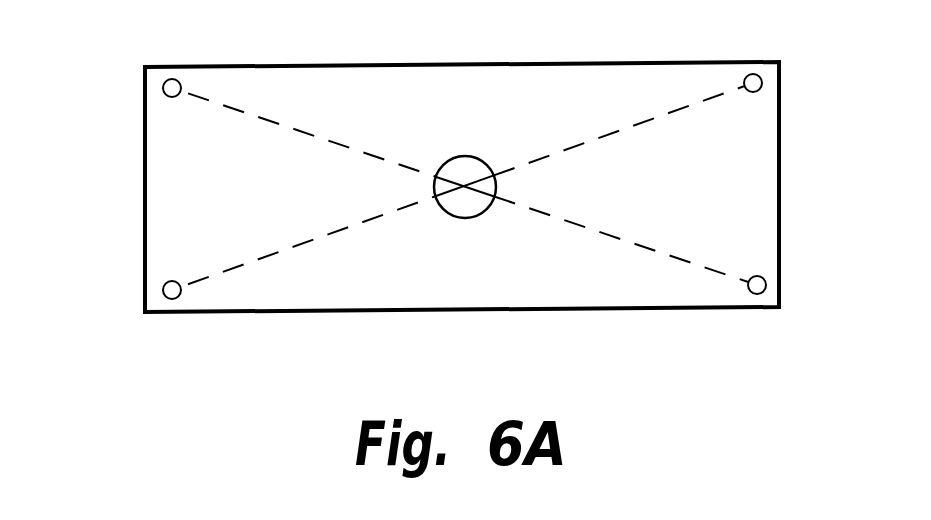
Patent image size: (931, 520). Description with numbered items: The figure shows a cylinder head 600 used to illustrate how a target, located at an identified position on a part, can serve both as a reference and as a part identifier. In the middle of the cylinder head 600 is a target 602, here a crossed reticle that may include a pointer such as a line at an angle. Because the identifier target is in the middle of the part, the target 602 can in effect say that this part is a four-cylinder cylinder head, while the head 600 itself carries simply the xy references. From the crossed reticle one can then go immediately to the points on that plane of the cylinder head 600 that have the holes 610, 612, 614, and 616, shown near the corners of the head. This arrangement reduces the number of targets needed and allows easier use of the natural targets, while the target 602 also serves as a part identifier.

The cylinder head 600 is at (779, 183).
The target 602 is at (480, 157).
The hole 610 is at (178, 81).
The hole 612 is at (163, 290).
The hole 614 is at (766, 285).
The hole 616 is at (762, 83).